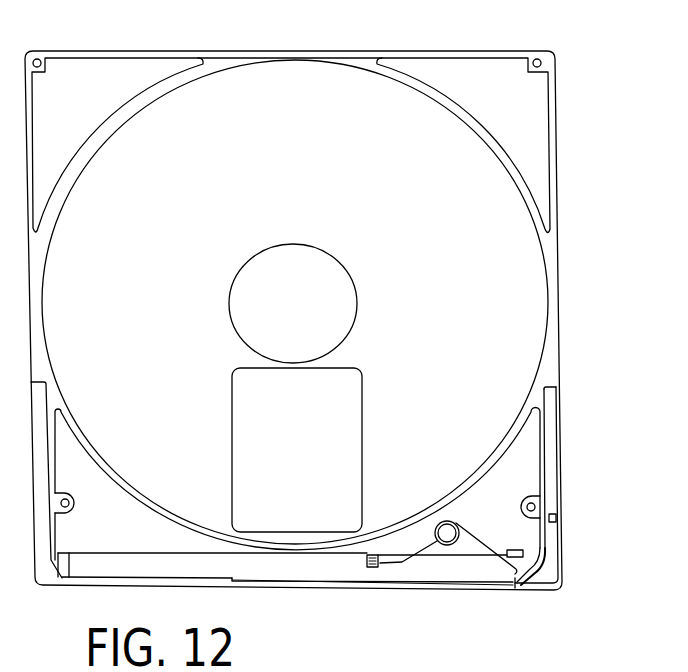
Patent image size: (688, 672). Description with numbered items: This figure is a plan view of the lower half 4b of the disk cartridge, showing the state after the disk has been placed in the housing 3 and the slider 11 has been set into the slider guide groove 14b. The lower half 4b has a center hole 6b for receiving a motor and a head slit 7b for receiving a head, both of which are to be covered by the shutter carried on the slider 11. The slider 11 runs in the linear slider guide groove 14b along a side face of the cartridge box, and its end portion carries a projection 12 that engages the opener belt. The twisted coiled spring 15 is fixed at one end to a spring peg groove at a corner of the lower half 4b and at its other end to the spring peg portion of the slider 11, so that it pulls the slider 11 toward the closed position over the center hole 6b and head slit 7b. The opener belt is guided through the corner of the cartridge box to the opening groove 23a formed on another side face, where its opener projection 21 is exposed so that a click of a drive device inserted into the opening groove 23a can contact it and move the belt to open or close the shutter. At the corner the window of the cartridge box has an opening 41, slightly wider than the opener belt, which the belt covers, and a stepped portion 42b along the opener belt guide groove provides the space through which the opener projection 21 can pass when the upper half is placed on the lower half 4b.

The lower half 4b is at (471, 51).
The housing 3 is at (495, 197).
The center hole 6b is at (357, 300).
The head slit 7b is at (362, 381).
The opening groove 23a is at (553, 425).
The opener projection 21 is at (556, 519).
The slider guide groove 14b is at (60, 568).
The slider 11 is at (280, 570).
The projection 12 is at (355, 583).
The twisted coiled spring 15 is at (420, 563).
The opening 41 is at (508, 590).
The stepped portion 42b is at (515, 585).